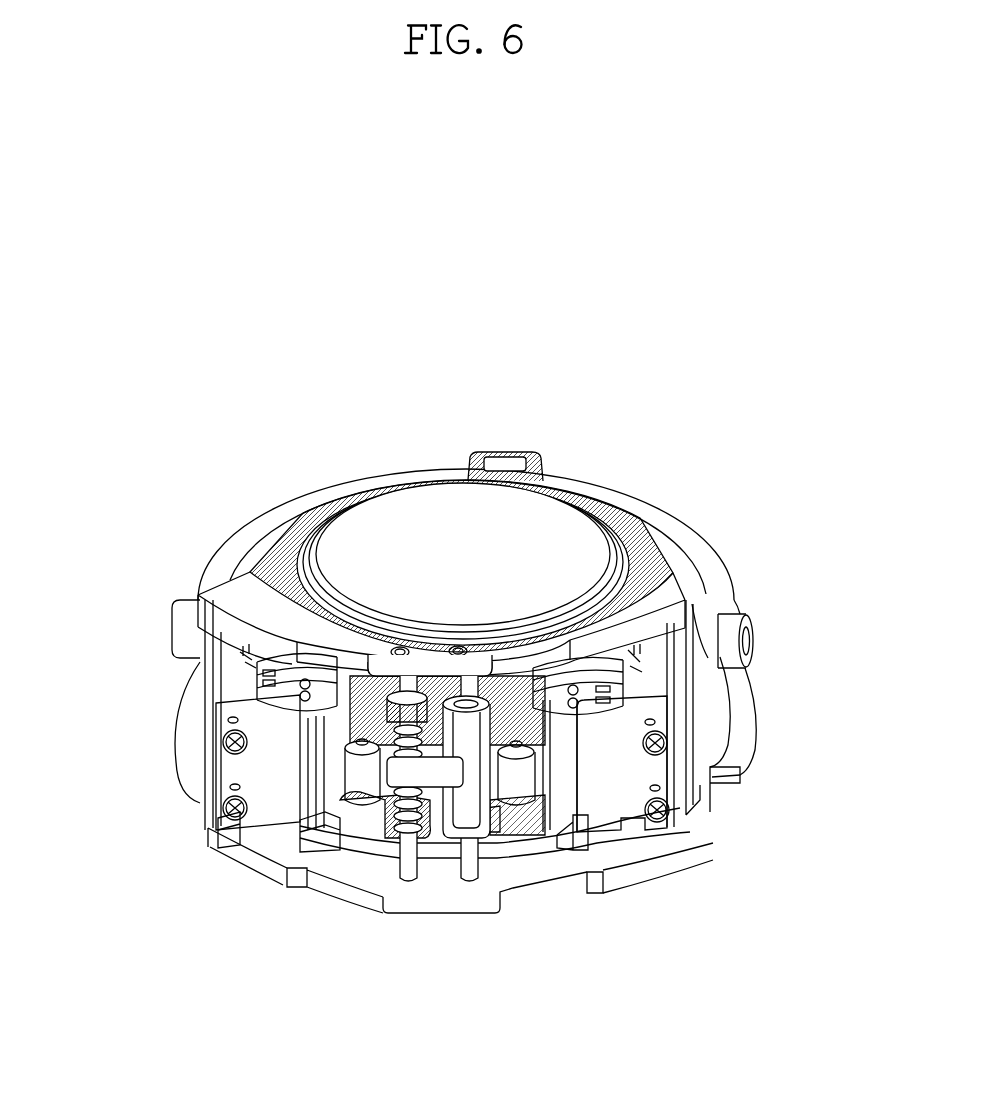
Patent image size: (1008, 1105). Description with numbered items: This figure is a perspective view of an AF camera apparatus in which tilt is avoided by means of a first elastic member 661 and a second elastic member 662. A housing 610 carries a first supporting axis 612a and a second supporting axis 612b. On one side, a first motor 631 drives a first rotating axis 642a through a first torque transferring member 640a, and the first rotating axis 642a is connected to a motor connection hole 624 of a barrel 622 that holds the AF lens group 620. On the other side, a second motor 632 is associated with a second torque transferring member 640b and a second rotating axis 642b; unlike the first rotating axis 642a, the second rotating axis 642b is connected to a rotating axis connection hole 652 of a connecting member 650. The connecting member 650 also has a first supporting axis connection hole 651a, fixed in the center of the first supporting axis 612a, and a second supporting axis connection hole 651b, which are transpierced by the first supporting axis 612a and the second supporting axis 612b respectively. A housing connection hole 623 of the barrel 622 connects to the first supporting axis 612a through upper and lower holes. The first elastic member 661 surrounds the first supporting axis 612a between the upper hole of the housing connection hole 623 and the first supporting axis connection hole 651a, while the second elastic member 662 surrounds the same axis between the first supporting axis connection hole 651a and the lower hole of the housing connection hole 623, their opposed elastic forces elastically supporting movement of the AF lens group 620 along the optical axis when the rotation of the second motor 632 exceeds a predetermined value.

The housing 610 is at (652, 512).
The first supporting axis 612a is at (413, 880).
The second supporting axis 612b is at (470, 880).
The AF lens group 620 is at (425, 530).
The barrel 622 is at (300, 510).
The housing connection hole 623 is at (360, 772).
The motor connection hole 624 is at (316, 750).
The first motor 631 is at (230, 762).
The second motor 632 is at (660, 767).
The first torque transferring member 640a is at (240, 815).
The second torque transferring member 640b is at (557, 773).
The first rotating axis 642a is at (330, 760).
The second rotating axis 642b is at (503, 817).
The connecting member 650 is at (508, 798).
The first supporting axis connection hole 651a is at (430, 822).
The second supporting axis connection hole 651b is at (505, 762).
The rotating axis connection hole 652 is at (512, 722).
The first elastic member 661 is at (377, 812).
The second elastic member 662 is at (400, 835).